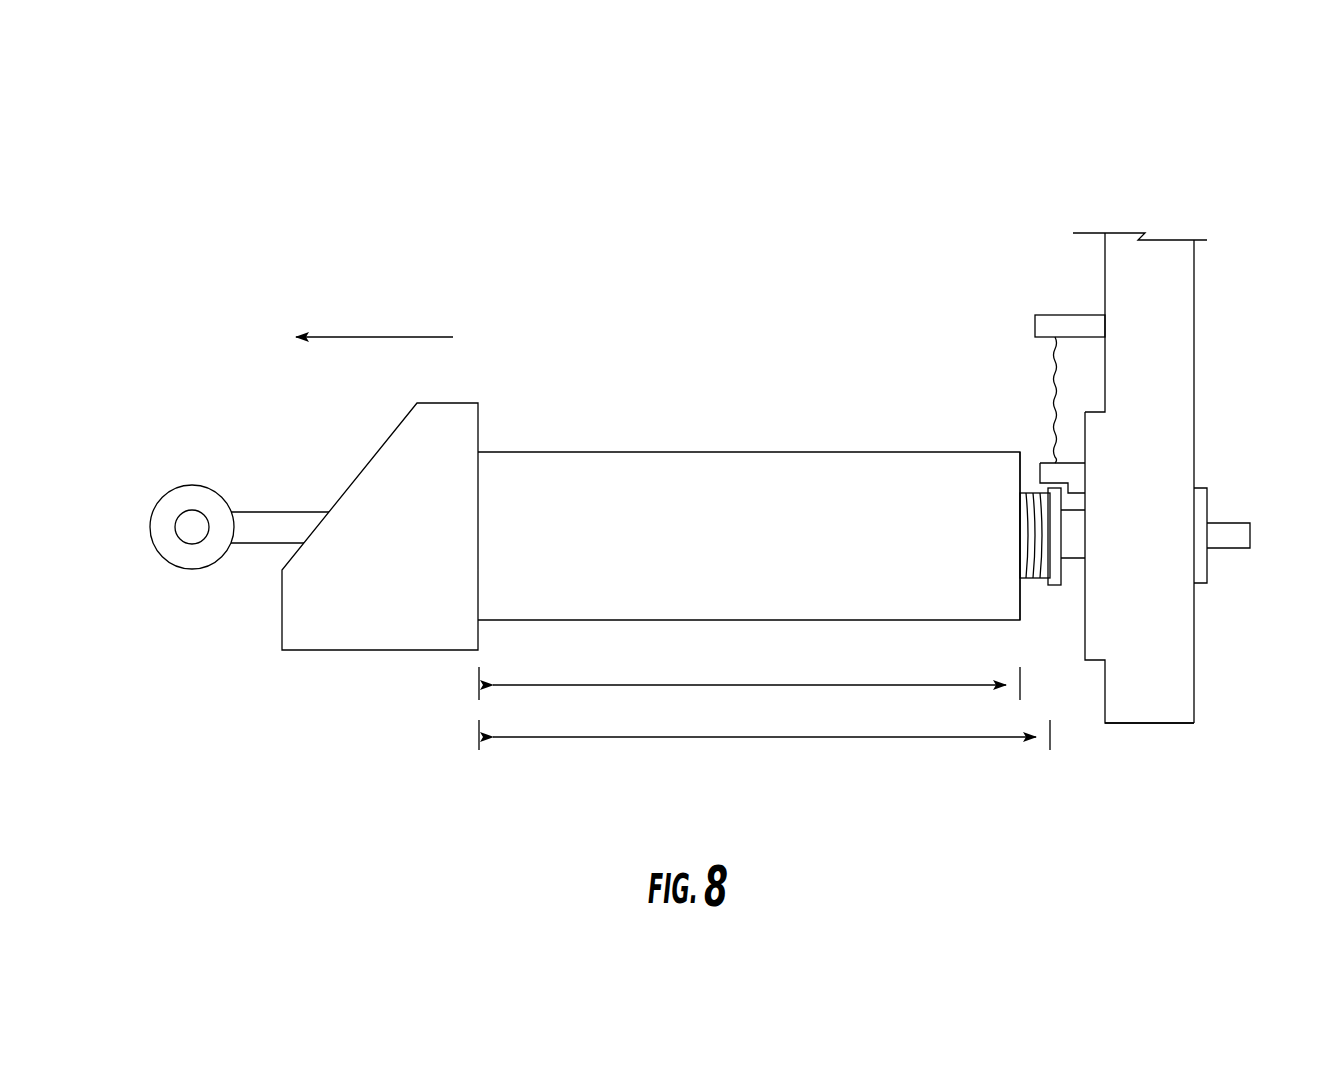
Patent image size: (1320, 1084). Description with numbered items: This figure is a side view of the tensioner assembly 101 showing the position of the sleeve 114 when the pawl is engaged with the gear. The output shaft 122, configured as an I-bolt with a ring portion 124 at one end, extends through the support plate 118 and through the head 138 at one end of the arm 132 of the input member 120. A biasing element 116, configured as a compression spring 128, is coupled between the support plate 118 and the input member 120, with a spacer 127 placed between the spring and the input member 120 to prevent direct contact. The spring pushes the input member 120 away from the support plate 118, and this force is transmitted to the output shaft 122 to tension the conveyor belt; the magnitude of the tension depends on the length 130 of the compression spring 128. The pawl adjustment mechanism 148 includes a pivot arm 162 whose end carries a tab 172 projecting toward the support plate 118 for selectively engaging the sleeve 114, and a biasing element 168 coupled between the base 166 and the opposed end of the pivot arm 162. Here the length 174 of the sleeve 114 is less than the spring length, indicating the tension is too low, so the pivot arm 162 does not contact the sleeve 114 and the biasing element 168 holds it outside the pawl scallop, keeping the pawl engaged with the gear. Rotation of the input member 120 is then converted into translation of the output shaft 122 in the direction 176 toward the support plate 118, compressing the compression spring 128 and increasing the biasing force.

The tensioner assembly 101 is at (540, 134).
The sleeve 114 is at (680, 450).
The biasing element 116 is at (1042, 582).
The support plate 118 is at (360, 652).
The input member 120 is at (1208, 398).
The output shaft 122 is at (297, 508).
The ring portion 124 is at (190, 571).
The spacer 127 is at (1072, 560).
The compression spring 128 is at (1025, 537).
The length of the compression spring 130 is at (680, 738).
The arm 132 is at (1196, 305).
The head 138 is at (1147, 724).
The pawl adjustment mechanism 148 is at (1010, 318).
The pivot arm 162 is at (1100, 476).
The base 166 is at (1068, 313).
The biasing element 168 is at (1050, 400).
The tab 172 is at (1050, 461).
The length of the sleeve 174 is at (755, 683).
The direction toward the support plate 176 is at (385, 335).